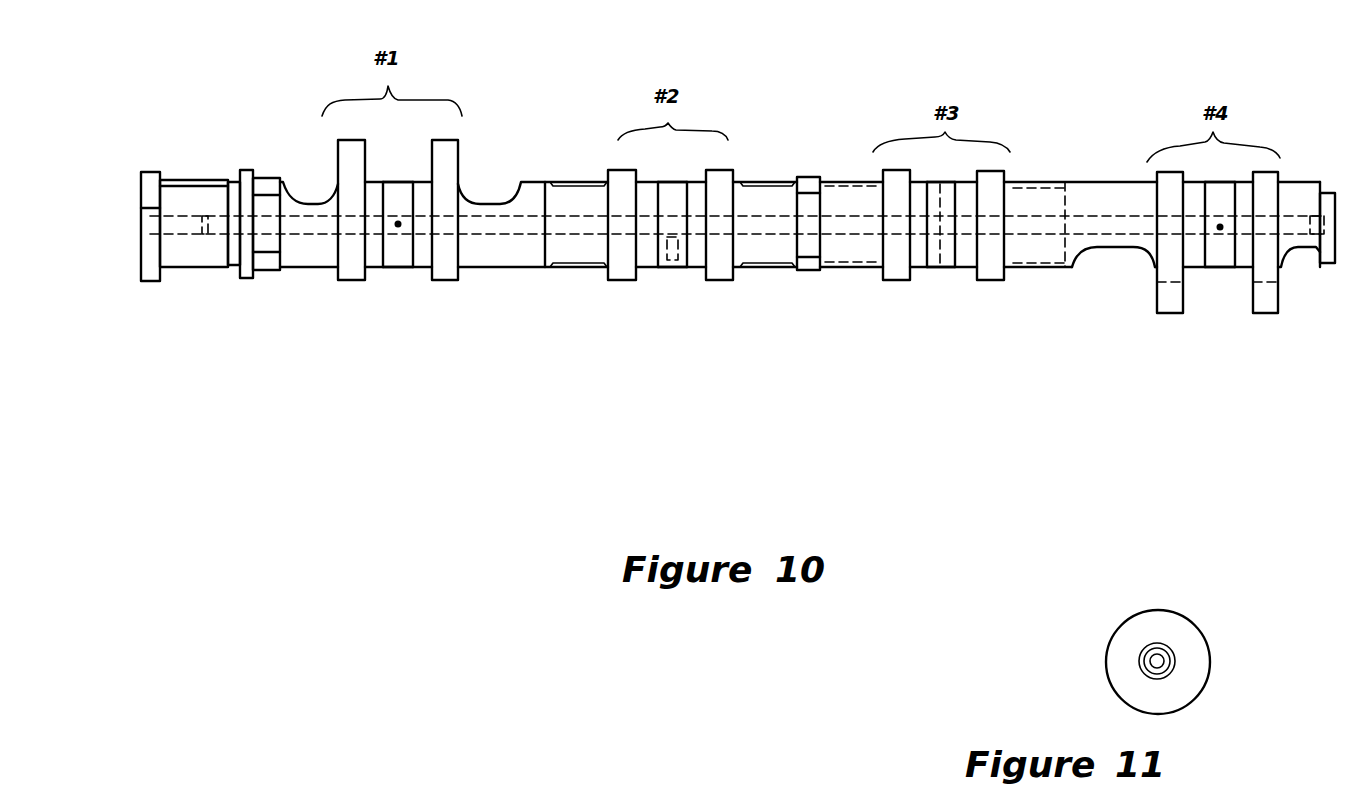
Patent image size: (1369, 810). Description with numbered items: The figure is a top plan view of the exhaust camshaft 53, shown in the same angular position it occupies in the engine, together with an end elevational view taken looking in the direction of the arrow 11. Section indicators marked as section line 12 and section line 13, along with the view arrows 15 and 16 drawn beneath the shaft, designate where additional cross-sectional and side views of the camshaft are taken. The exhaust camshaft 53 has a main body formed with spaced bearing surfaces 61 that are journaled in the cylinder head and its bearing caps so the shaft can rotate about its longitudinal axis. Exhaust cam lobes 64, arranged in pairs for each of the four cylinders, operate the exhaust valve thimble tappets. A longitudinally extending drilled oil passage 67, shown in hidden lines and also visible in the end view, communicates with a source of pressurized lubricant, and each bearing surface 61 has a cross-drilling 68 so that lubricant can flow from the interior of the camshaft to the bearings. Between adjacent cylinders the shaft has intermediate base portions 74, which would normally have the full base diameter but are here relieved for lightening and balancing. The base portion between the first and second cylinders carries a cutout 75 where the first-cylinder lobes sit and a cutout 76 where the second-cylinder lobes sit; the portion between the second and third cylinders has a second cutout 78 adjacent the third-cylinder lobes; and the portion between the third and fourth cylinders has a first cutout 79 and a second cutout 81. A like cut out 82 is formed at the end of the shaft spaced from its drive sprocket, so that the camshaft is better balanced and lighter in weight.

In FIG. 10, the arrow 11 is at (110, 227).
In FIG. 10, the section line 12 is at (750, 100).
In FIG. 10, the section line 13 is at (1026, 100).
In FIG. 10, the view arrow 15 is at (547, 408).
In FIG. 10, the view arrow 16 is at (808, 398).
In FIG. 10, the exhaust camshaft 53 is at (849, 165).
In FIG. 11, the exhaust camshaft 53 is at (1212, 608).
In FIG. 10, the bearing surfaces 61 is at (392, 257).
In FIG. 10, the exhaust cam lobes 64 is at (342, 152).
In FIG. 10, the drilled oil passage 67 is at (302, 232).
In FIG. 11, the drilled oil passage 67 is at (1172, 670).
In FIG. 10, the cross-drilling 68 is at (399, 228).
In FIG. 10, the intermediate base portions 74 is at (577, 252).
In FIG. 10, the cutout 75 is at (483, 199).
In FIG. 10, the cutout 76 is at (773, 253).
In FIG. 10, the second cutout 78 is at (835, 198).
In FIG. 10, the first cutout 79 is at (1048, 197).
In FIG. 10, the second cutout 81 is at (1117, 250).
In FIG. 10, the cut out 82 is at (1303, 263).